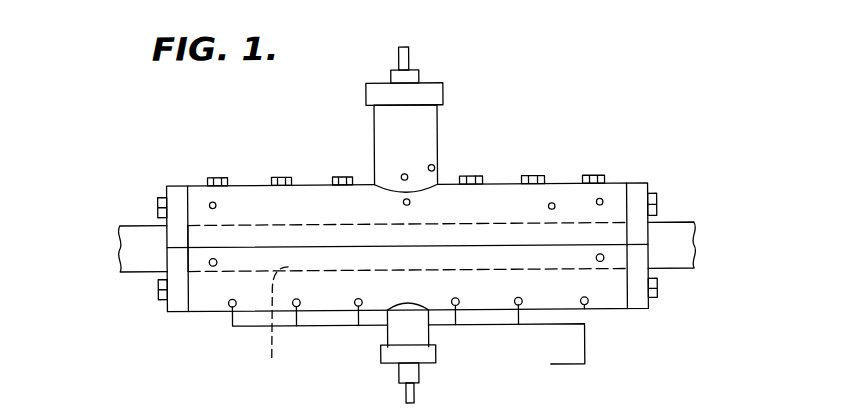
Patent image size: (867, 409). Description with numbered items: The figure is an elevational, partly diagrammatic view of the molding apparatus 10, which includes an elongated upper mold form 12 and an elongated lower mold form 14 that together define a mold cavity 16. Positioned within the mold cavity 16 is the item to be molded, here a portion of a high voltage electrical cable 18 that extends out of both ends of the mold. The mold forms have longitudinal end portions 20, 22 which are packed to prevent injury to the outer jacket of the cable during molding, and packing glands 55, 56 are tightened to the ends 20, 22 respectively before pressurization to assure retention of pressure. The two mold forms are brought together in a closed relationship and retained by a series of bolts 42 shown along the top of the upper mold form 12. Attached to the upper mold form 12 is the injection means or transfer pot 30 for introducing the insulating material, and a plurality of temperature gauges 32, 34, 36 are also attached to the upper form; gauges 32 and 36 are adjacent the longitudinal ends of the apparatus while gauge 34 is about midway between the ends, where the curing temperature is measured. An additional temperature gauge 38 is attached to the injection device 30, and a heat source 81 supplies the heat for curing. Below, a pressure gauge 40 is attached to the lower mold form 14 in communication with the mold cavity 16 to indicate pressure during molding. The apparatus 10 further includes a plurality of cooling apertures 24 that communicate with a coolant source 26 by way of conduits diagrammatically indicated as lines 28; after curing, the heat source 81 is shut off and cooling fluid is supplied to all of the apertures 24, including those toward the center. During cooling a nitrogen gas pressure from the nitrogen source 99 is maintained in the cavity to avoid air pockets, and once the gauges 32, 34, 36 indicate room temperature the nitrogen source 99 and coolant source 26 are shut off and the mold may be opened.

The molding apparatus 10 is at (143, 294).
The upper mold form 12 is at (567, 190).
The lower mold form 14 is at (556, 293).
The mold cavity 16 is at (286, 317).
The high voltage electrical cable 18 is at (133, 241).
The longitudinal end portion 20 is at (183, 240).
The longitudinal end portion 22 is at (631, 255).
The apertures 24 is at (357, 306).
The coolant source 26 is at (519, 378).
The conduits 28 is at (517, 306).
The transfer pot 30 is at (367, 88).
The temperature gauge 32 is at (211, 201).
The temperature gauge 34 is at (403, 202).
The temperature gauge 36 is at (601, 200).
The temperature gauge 38 is at (408, 175).
The pressure gauge 40 is at (383, 363).
The bolts 42 is at (270, 176).
The packing gland 55 is at (175, 192).
The packing gland 56 is at (638, 194).
The heat source 81 is at (436, 168).
The nitrogen source 99 is at (213, 265).